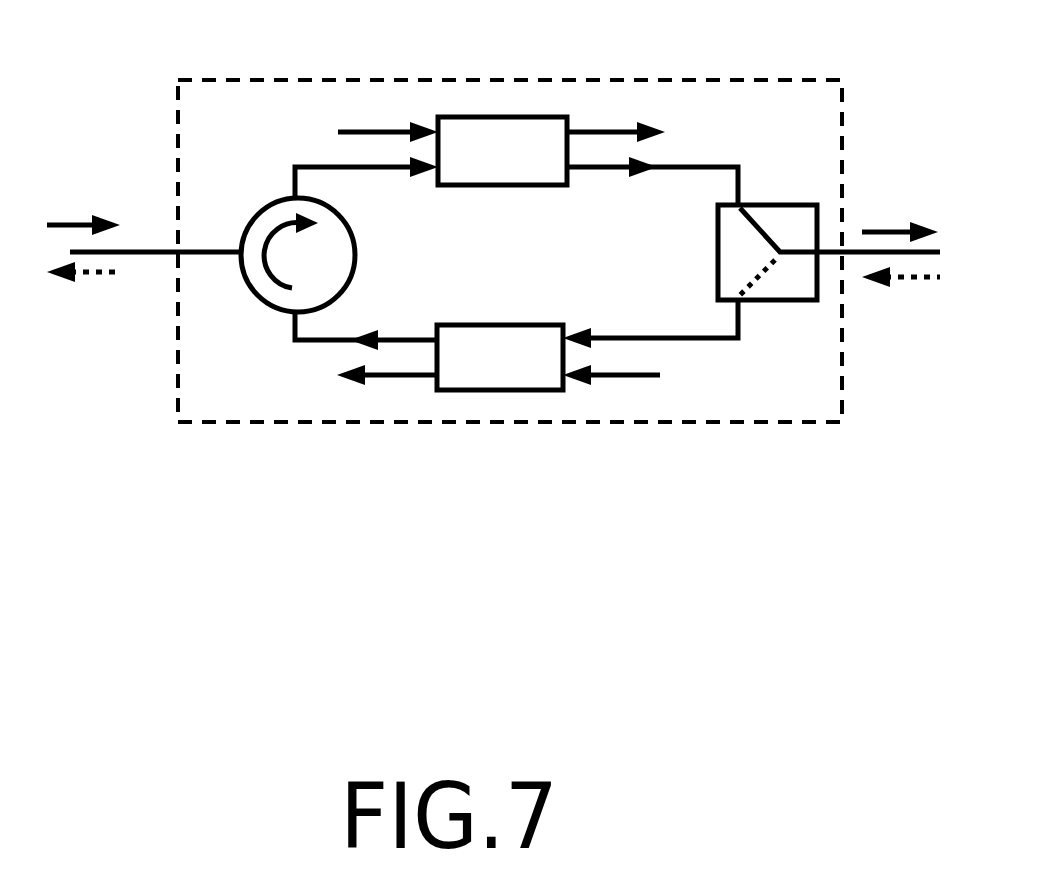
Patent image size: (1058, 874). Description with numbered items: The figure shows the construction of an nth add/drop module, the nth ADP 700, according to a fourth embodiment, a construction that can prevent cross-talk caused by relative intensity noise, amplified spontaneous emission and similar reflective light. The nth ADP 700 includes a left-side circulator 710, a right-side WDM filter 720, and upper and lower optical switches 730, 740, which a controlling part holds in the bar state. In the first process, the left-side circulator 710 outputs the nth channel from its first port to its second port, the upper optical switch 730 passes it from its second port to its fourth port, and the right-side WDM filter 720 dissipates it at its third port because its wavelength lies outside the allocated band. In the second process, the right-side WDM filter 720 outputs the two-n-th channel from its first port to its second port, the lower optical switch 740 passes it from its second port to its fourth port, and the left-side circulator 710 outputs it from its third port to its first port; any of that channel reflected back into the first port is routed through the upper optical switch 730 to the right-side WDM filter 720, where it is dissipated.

The nth ADP 700 is at (180, 368).
The left-side circulator 710 is at (242, 247).
The right-side WDM filter 720 is at (792, 300).
The upper optical switch 730 is at (498, 115).
The lower optical switch 740 is at (540, 392).